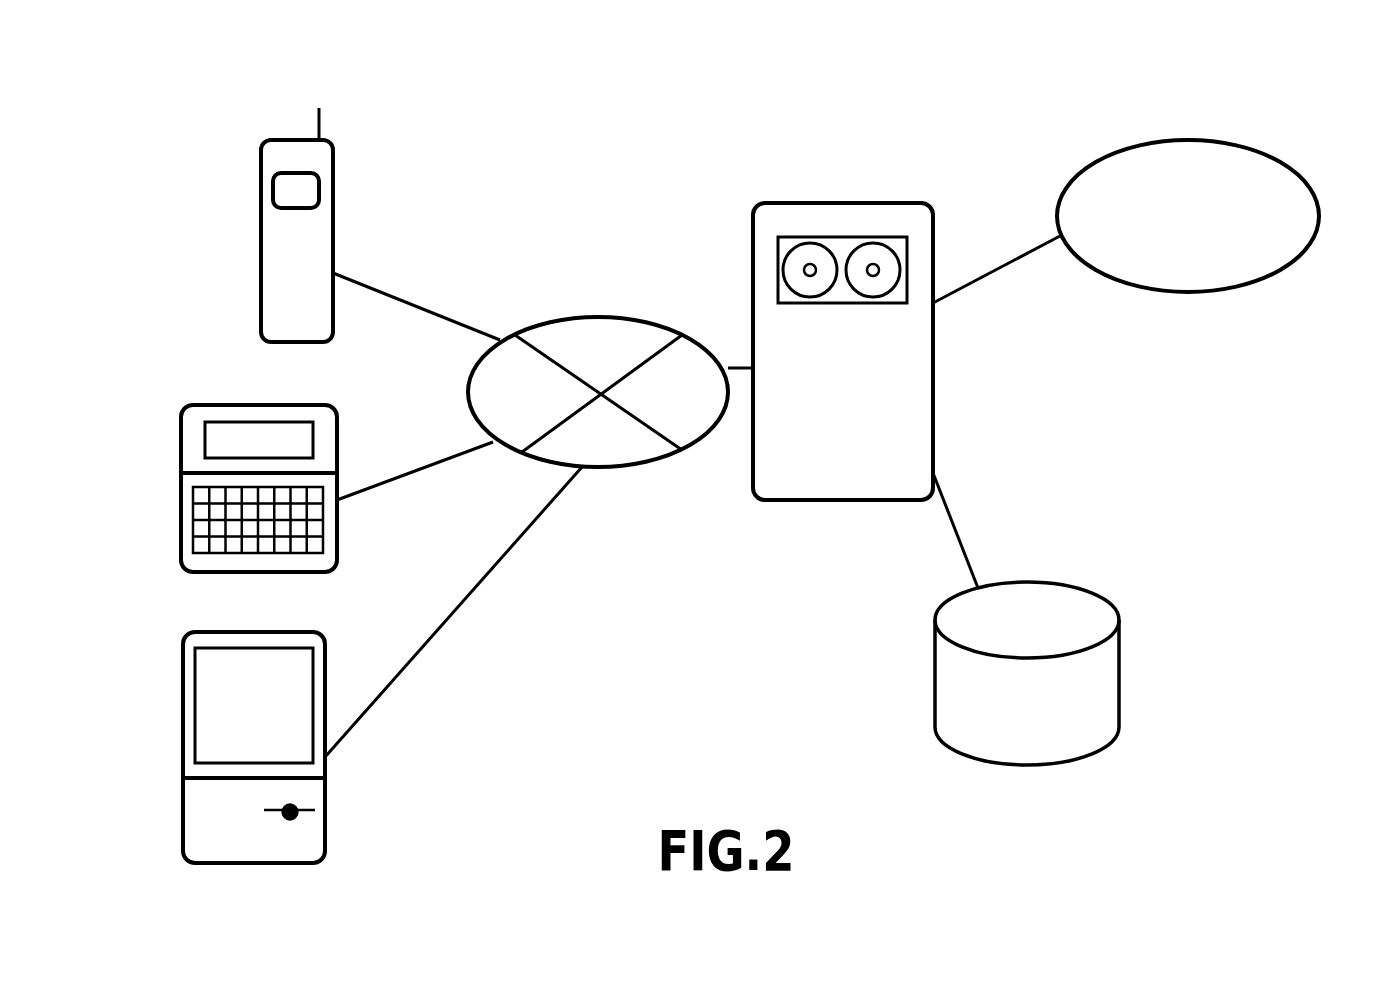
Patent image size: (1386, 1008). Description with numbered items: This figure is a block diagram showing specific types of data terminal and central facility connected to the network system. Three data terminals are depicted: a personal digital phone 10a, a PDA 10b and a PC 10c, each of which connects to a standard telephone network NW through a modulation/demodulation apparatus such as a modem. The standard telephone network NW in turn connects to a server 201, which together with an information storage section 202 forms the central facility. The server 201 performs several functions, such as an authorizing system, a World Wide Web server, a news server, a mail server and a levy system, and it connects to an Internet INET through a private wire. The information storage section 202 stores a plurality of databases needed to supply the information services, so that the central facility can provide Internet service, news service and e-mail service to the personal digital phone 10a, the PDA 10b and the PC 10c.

The personal digital phone 10a is at (260, 175).
The PDA 10b is at (337, 440).
The PC 10c is at (325, 680).
The standard telephone network NW is at (662, 460).
The server 201 is at (833, 203).
The Internet INET is at (1200, 140).
The information storage section 202 is at (1063, 582).